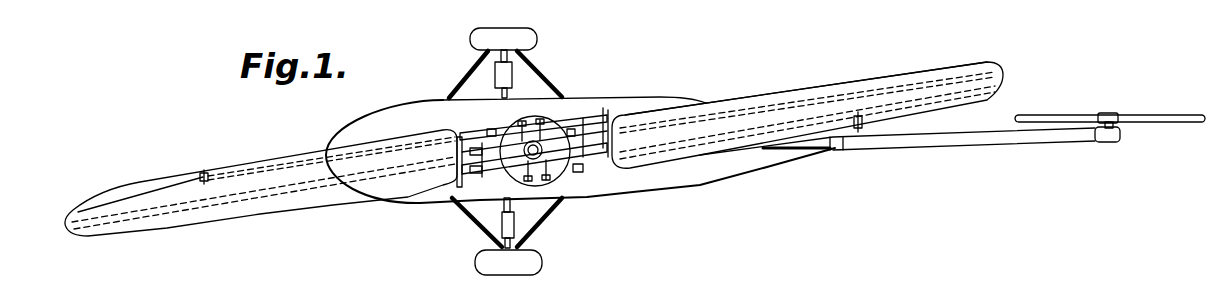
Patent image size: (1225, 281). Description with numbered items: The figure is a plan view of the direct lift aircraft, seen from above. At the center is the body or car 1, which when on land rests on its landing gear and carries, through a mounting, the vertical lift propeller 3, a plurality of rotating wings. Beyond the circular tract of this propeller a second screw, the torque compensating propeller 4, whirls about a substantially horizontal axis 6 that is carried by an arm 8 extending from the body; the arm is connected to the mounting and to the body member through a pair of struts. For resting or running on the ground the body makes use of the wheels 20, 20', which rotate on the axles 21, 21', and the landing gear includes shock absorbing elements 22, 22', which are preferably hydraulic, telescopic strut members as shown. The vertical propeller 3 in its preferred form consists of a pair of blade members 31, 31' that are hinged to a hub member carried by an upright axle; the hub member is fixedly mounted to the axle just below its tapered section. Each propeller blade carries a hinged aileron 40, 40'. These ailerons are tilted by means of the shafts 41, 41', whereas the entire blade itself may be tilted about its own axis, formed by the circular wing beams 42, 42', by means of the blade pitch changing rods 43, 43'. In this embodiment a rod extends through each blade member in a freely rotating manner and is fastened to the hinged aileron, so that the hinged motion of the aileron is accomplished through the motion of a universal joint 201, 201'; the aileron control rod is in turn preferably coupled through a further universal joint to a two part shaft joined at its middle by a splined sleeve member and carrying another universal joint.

The body or car 1 is at (657, 178).
The vertical lift propeller 3 is at (841, 90).
The torque compensating propeller 4 is at (1068, 119).
The horizontal axis 6 is at (1107, 142).
The arm 8 is at (922, 139).
The wheel 20 is at (485, 39).
The wheel 20' is at (534, 265).
The axle 21 is at (501, 74).
The axle 21' is at (504, 223).
The shock absorbing element 22 is at (517, 74).
The shock absorbing element 22' is at (528, 223).
The blade member 31 is at (266, 168).
The blade member 31' is at (807, 143).
The aileron 40 is at (261, 183).
The aileron 40' is at (807, 115).
The shaft 41 is at (497, 107).
The shaft 41' is at (563, 196).
The circular wing beam 42 is at (263, 193).
The circular wing beam 42' is at (807, 98).
The blade pitch changing rod 43 is at (538, 128).
The blade pitch changing rod 43' is at (478, 180).
The universal joint 201 is at (212, 162).
The universal joint 201' is at (873, 156).